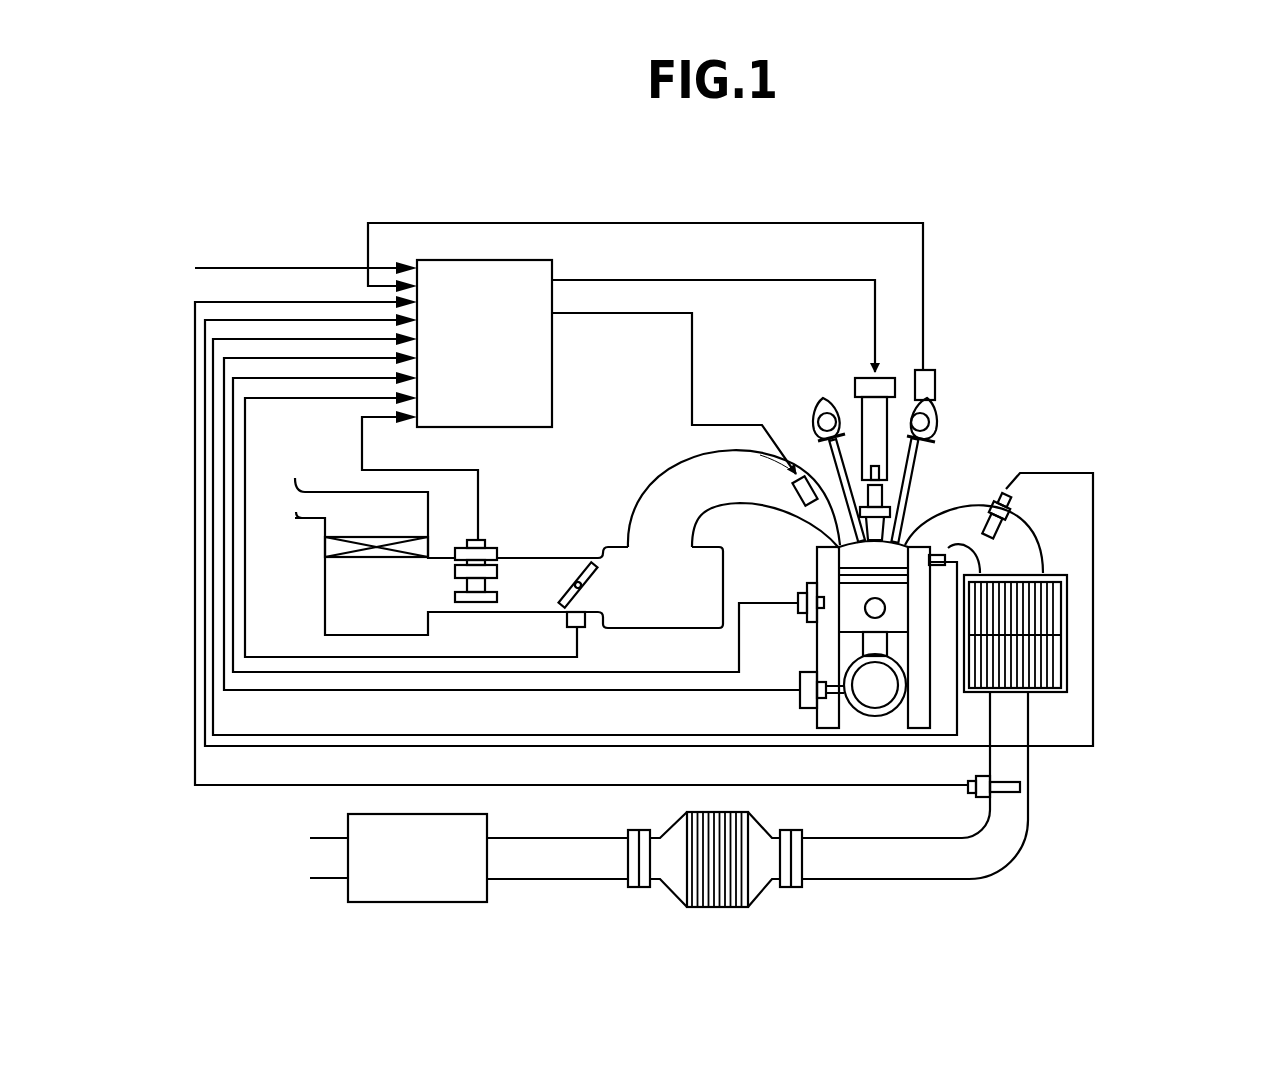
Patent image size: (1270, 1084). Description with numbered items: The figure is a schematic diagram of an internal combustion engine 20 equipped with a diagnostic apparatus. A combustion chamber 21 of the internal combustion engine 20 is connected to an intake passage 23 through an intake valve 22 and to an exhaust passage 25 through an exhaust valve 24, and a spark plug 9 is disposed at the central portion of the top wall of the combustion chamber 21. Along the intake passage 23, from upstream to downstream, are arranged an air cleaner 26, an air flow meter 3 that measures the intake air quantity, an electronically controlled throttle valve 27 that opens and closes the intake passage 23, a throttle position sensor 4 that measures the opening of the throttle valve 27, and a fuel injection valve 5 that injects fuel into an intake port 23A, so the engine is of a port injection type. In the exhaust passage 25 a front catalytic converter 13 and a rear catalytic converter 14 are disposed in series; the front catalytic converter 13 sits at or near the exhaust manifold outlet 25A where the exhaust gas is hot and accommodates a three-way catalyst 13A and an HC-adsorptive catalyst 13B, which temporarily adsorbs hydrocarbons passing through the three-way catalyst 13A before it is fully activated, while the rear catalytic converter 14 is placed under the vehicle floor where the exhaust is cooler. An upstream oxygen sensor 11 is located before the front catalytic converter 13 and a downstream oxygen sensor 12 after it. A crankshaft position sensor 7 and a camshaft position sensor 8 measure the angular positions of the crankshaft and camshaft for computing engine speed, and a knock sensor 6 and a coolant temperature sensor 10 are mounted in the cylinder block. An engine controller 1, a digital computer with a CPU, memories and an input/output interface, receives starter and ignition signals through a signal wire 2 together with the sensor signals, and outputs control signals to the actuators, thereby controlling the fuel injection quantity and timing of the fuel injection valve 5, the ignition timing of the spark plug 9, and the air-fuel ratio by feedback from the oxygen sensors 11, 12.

The engine controller 1 is at (548, 272).
The signal wire 2 is at (258, 262).
The air flow meter 3 is at (478, 585).
The throttle position sensor 4 is at (589, 622).
The fuel injection valve 5 is at (792, 468).
The knock sensor 6 is at (799, 606).
The crankshaft position sensor 7 is at (806, 696).
The camshaft position sensor 8 is at (930, 372).
The spark plug 9 is at (879, 377).
The coolant temperature sensor 10 is at (945, 557).
The upstream oxygen sensor 11 is at (1010, 512).
The downstream oxygen sensor 12 is at (968, 790).
The front catalytic converter 13 is at (1100, 633).
The three-way catalyst 13A is at (1040, 606).
The HC-adsorptive catalyst 13B is at (1040, 654).
The rear catalytic converter 14 is at (728, 904).
The internal combustion engine 20 is at (800, 568).
The combustion chamber 21 is at (890, 546).
The intake valve 22 is at (826, 455).
The intake passage 23 is at (657, 520).
The intake port 23A is at (775, 466).
The exhaust valve 24 is at (930, 452).
The exhaust passage 25 is at (1005, 856).
The exhaust manifold outlet 25A is at (1043, 555).
The air cleaner 26 is at (362, 558).
The throttle valve 27 is at (587, 565).